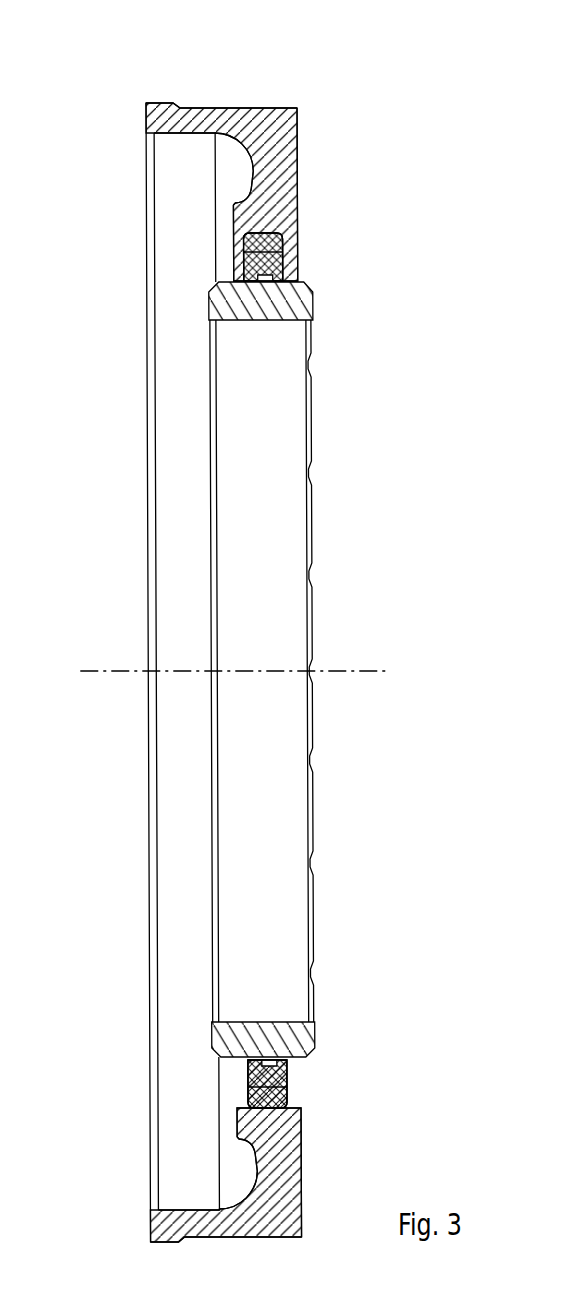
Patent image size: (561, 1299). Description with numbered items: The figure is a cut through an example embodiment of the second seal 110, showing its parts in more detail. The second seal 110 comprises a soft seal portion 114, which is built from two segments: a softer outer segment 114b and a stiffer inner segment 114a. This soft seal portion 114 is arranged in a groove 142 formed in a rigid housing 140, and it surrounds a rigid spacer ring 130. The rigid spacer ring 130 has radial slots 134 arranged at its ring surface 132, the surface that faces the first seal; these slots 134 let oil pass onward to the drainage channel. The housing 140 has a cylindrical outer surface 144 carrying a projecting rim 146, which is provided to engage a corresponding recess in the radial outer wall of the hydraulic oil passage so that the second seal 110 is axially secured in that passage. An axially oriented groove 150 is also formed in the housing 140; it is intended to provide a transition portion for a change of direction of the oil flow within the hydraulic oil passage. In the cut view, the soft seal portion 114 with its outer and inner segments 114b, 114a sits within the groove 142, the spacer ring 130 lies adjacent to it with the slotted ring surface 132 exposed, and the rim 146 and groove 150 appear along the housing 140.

The second seal 110 is at (389, 122).
The soft seal portion 114 is at (291, 247).
The stiffer inner segment 114a is at (244, 265).
The softer outer segment 114b is at (247, 240).
The rigid spacer ring 130 is at (226, 303).
The ring surface 132 is at (314, 525).
The radial slots 134 is at (308, 473).
The rigid housing 140 is at (297, 106).
The groove 142 is at (288, 263).
The cylindrical outer surface 144 is at (250, 107).
The projecting rim 146 is at (150, 103).
The axially oriented groove 150 is at (250, 165).